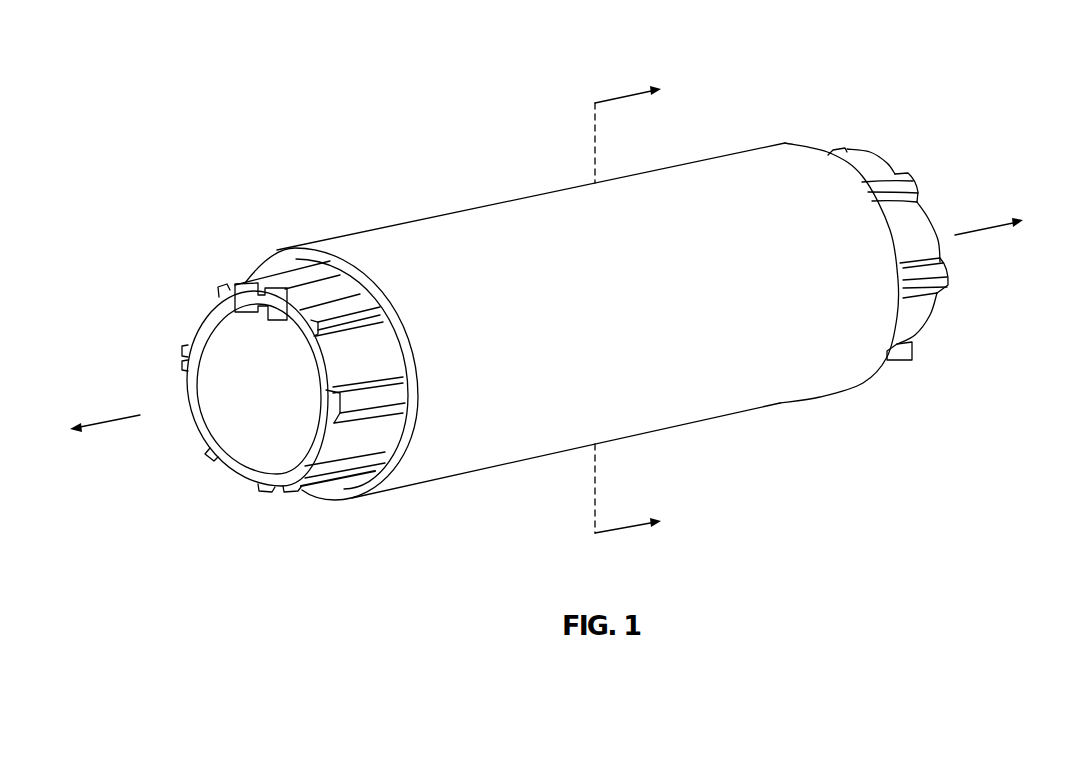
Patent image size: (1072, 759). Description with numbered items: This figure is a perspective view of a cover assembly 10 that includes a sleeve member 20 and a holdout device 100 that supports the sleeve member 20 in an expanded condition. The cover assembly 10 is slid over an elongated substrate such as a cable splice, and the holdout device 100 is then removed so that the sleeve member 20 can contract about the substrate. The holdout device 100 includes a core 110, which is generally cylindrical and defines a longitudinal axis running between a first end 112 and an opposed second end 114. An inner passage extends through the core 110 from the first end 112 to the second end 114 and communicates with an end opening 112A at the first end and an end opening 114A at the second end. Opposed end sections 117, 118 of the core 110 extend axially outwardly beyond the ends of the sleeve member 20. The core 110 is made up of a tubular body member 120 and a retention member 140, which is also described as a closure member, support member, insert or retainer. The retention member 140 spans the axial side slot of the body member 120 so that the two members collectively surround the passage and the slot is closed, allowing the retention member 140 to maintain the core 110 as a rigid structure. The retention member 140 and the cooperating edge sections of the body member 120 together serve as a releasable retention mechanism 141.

The cover assembly 10 is at (182, 124).
The sleeve member 20 is at (748, 421).
The holdout device 100 is at (317, 506).
The core 110 is at (268, 504).
The first end 112 is at (203, 323).
The end opening 112A is at (240, 404).
The second end 114 is at (938, 305).
The end opening 114A is at (912, 146).
The end section 117 is at (377, 440).
The end section 118 is at (910, 315).
The tubular body member 120 is at (197, 398).
The retention member 140 is at (300, 282).
The releasable retention mechanism 141 is at (881, 124).